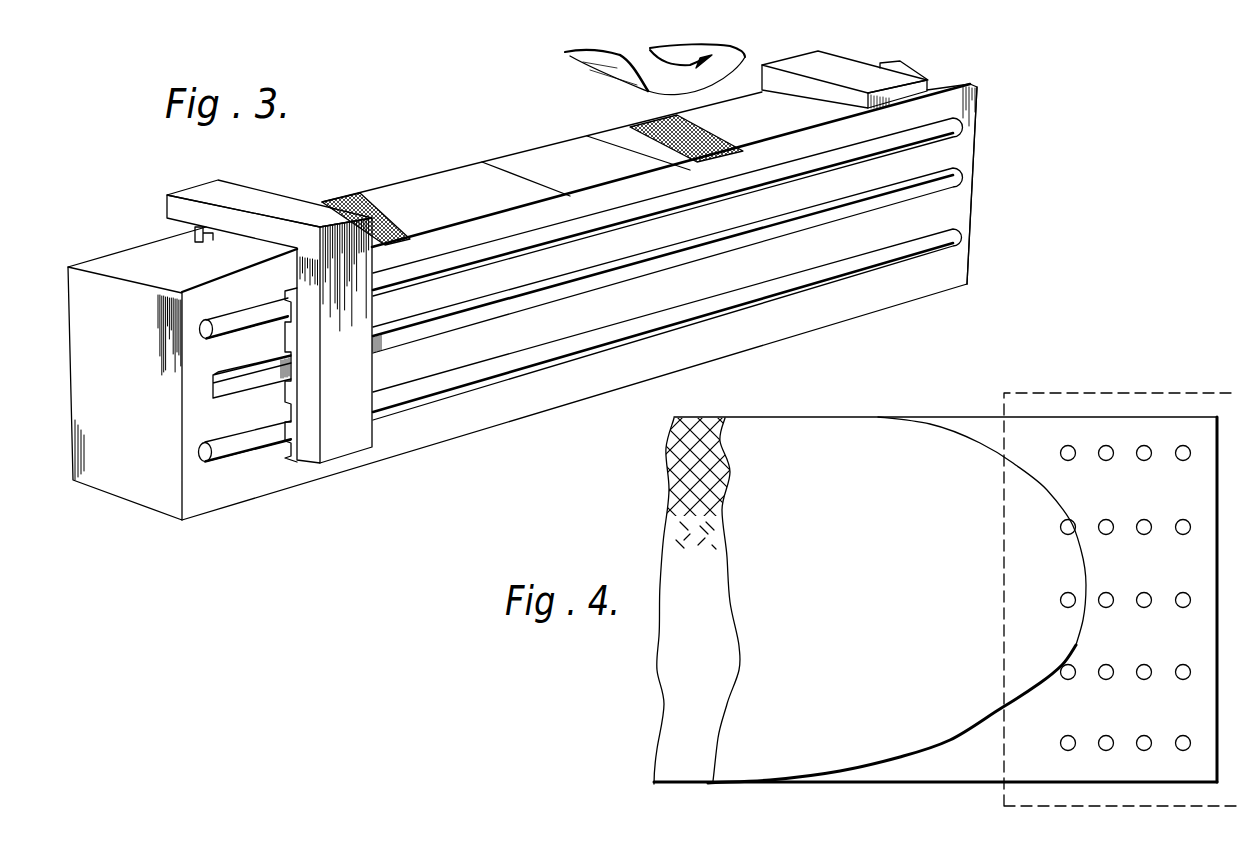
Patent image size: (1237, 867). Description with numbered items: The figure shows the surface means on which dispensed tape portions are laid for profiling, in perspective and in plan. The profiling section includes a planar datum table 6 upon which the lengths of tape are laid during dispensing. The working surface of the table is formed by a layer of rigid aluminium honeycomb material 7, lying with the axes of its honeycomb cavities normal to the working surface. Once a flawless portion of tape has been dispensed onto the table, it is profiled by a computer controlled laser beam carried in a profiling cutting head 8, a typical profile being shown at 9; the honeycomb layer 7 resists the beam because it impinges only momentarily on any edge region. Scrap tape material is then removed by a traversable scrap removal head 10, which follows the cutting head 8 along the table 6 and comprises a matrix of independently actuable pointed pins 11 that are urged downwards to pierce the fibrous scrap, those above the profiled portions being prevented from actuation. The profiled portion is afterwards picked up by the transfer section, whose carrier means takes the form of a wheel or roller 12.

In FIG. 3, the planar datum table 6 is at (410, 183).
In FIG. 4, the planar datum table 6 is at (935, 416).
In FIG. 3, the aluminium honeycomb layer 7 is at (338, 200).
In FIG. 4, the aluminium honeycomb layer 7 is at (667, 450).
In FIG. 3, the profiling cutting head 8 is at (244, 186).
In FIG. 4, the profile 9 is at (1068, 543).
In FIG. 3, the scrap removal head 10 is at (931, 90).
In FIG. 4, the scrap removal head 10 is at (1002, 795).
In FIG. 4, the pins 11 is at (1180, 446).
In FIG. 3, the wheel or roller 12 is at (574, 58).